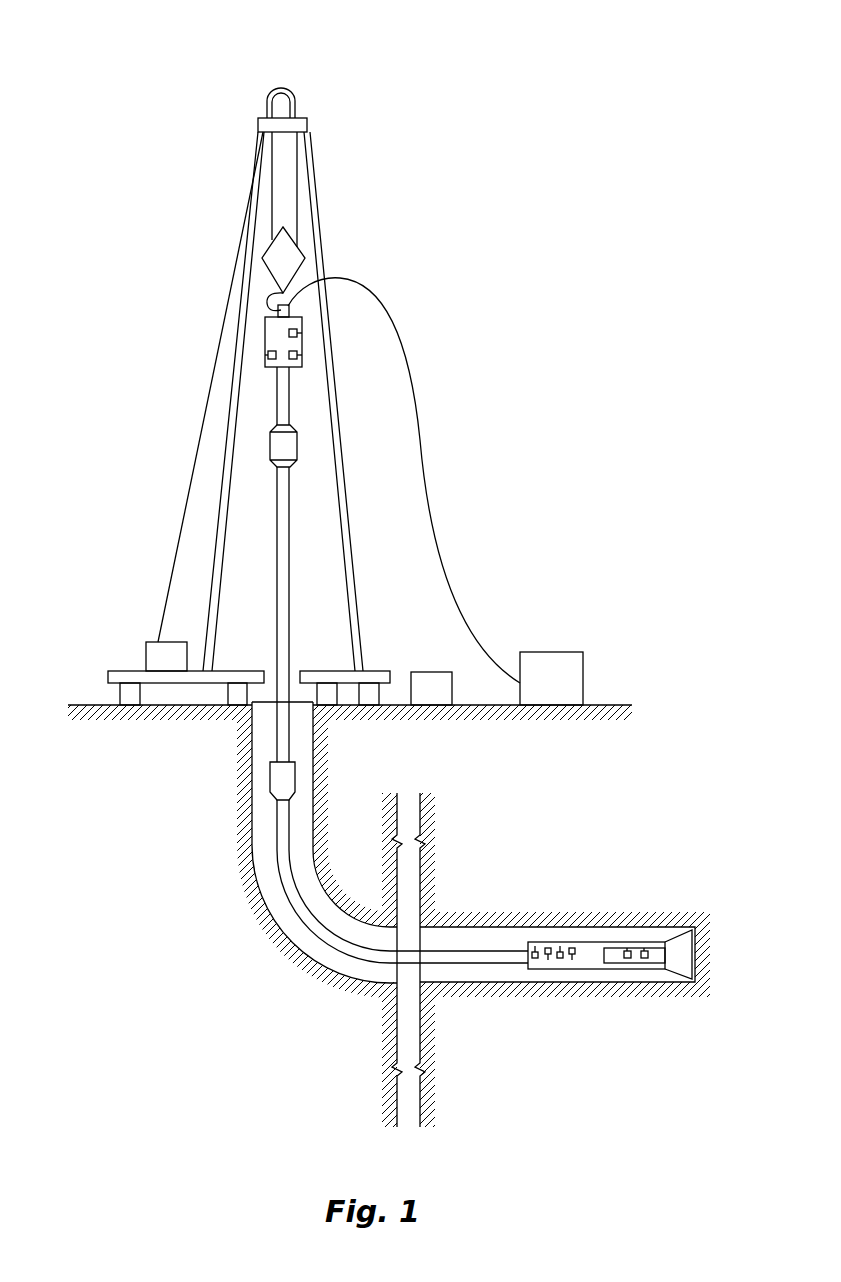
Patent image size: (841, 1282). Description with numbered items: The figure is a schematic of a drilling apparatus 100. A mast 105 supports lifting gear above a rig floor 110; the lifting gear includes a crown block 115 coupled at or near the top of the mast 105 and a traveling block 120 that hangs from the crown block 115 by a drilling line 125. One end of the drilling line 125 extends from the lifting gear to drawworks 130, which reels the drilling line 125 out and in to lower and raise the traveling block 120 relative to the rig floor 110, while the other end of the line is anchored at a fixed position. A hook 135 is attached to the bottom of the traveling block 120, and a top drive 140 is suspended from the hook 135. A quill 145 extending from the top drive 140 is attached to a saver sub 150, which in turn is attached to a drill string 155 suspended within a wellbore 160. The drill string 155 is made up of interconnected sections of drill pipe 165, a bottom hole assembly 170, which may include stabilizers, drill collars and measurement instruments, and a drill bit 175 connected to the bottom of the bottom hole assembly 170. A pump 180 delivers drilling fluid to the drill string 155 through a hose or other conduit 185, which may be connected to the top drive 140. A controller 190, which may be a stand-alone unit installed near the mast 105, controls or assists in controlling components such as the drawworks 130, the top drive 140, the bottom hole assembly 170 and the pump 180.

The apparatus 100 is at (218, 65).
The mast 105 is at (315, 166).
The rig floor 110 is at (108, 677).
The crown block 115 is at (296, 98).
The traveling block 120 is at (305, 263).
The drilling line 125 is at (262, 157).
The drawworks 130 is at (146, 658).
The hook 135 is at (266, 298).
The top drive 140 is at (265, 336).
The quill 145 is at (277, 405).
The saver sub 150 is at (270, 446).
The drill string 155 is at (273, 513).
The wellbore 160 is at (254, 842).
The drill pipe 165 is at (275, 625).
The bottom hole assembly 170 is at (648, 972).
The drill bit 175 is at (681, 934).
The pump 180 is at (548, 652).
The conduit 185 is at (425, 480).
The controller 190 is at (432, 672).